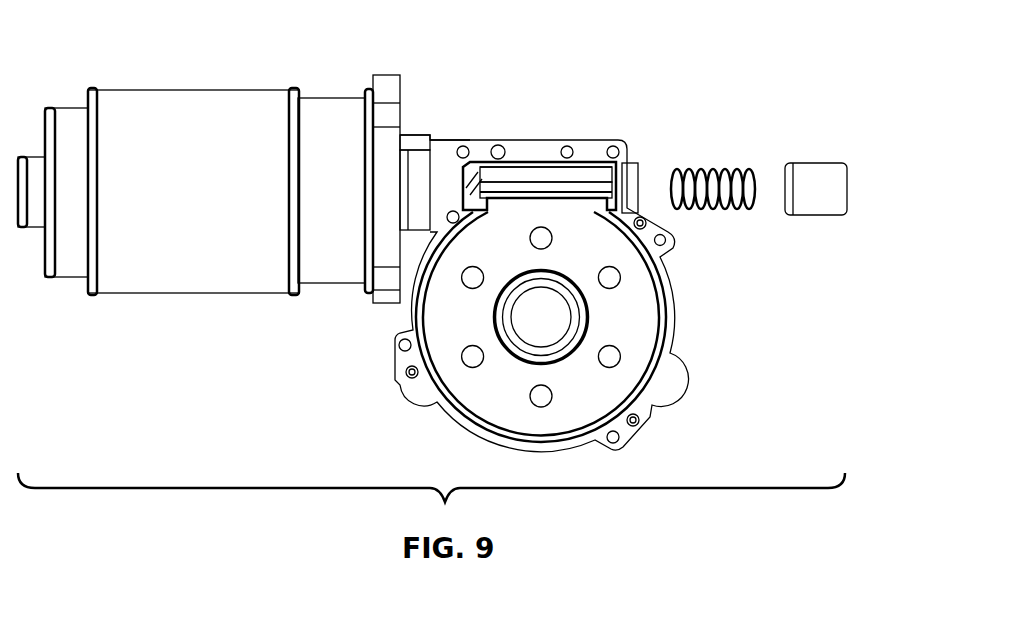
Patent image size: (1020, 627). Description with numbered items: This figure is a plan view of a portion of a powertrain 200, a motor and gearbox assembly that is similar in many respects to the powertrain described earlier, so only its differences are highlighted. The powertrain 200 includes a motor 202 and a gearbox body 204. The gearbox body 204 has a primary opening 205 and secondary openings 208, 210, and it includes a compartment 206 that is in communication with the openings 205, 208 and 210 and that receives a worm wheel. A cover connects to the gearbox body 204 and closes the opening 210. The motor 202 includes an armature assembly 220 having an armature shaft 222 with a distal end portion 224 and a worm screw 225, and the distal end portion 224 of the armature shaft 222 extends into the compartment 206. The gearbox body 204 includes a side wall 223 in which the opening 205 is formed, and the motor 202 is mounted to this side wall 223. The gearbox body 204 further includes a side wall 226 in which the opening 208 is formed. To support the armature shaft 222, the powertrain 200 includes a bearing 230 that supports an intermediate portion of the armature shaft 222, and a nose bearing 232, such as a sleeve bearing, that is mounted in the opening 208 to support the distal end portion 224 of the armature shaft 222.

The powertrain 200 is at (227, 62).
The motor 202 is at (335, 113).
The gearbox body 204 is at (535, 150).
The opening 205 is at (470, 190).
The compartment 206 is at (477, 397).
The opening 208 is at (606, 203).
The opening 210 is at (675, 325).
The armature assembly 220 is at (717, 155).
The armature shaft 222 is at (500, 160).
The side wall 223 is at (449, 153).
The distal end portion 224 is at (592, 187).
The worm screw 225 is at (735, 170).
The side wall 226 is at (633, 183).
The bearing 230 is at (418, 197).
The nose bearing 232 is at (847, 183).